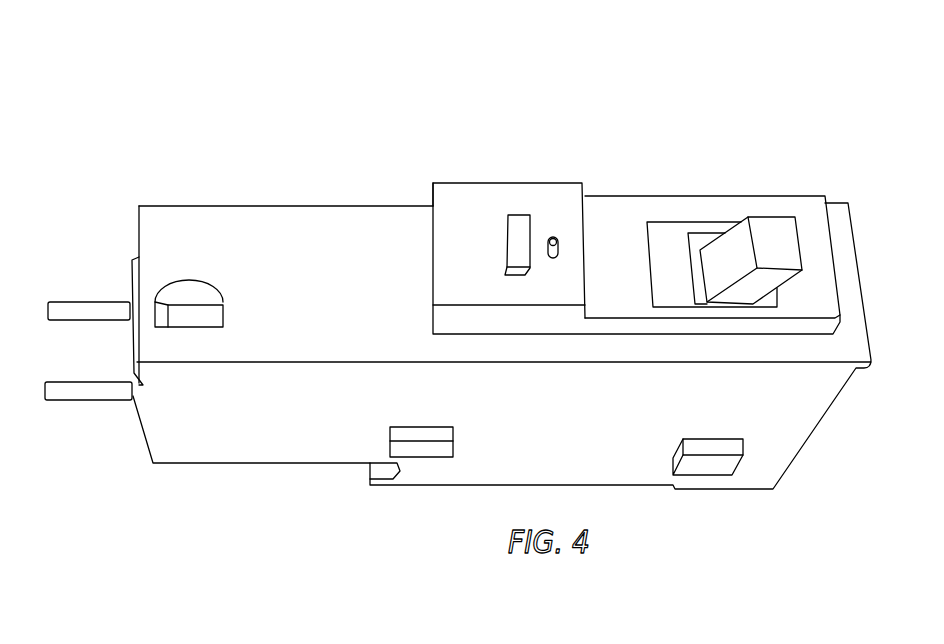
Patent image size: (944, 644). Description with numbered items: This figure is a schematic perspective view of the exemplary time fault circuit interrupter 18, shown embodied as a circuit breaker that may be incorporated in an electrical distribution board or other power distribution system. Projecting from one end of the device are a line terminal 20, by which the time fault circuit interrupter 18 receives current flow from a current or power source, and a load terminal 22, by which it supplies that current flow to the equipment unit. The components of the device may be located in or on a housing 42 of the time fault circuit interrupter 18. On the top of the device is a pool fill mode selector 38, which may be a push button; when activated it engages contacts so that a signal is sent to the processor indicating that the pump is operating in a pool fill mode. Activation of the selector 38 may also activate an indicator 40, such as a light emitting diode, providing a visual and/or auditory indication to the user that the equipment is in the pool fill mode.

The time fault circuit interrupter 18 is at (538, 132).
The line terminal 20 is at (78, 300).
The load terminal 22 is at (83, 405).
The pool fill mode selector 38 is at (515, 242).
The indicator 40 is at (553, 233).
The housing 42 is at (814, 197).